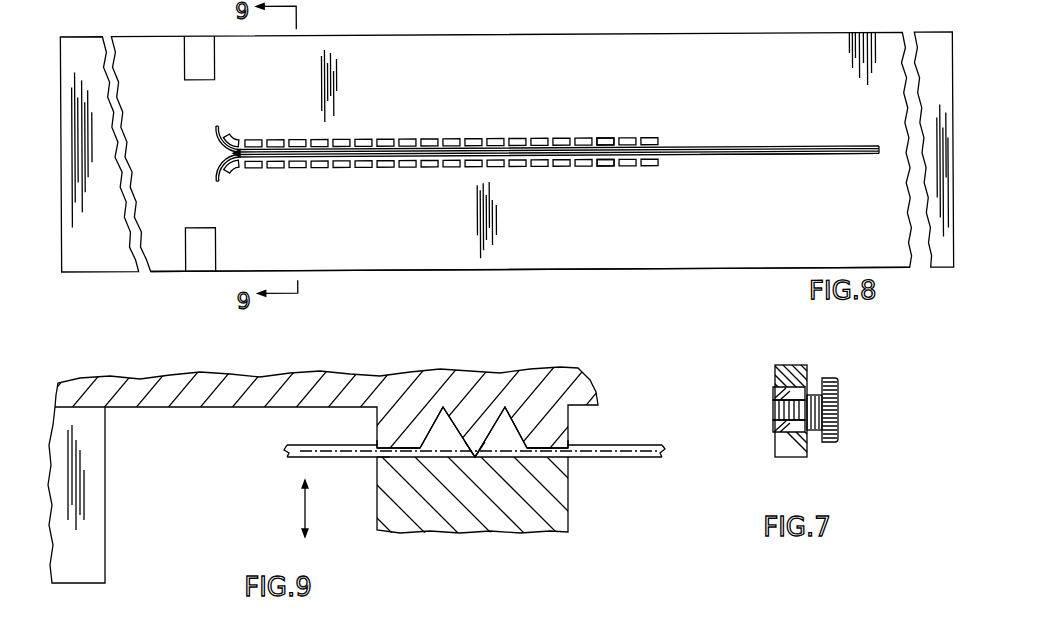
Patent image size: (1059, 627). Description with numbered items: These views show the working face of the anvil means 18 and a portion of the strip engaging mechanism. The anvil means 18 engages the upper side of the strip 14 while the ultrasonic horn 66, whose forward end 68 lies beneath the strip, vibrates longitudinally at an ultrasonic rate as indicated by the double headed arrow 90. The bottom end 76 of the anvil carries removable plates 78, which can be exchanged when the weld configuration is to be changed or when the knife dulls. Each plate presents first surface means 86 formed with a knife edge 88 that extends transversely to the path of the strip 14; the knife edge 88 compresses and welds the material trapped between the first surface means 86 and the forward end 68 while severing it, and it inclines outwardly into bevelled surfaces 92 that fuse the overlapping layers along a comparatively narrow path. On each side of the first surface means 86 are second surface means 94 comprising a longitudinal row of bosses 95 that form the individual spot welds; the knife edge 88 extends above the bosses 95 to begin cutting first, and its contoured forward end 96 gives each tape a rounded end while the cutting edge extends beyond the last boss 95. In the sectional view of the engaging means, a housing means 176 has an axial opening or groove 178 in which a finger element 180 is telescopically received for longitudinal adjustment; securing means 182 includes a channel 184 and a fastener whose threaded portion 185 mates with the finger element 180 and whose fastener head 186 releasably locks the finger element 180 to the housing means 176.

In FIG. 9, the strip 14 is at (622, 458).
In FIG. 9, the anvil means 18 is at (577, 365).
In FIG. 9, the ultrasonic horn 66 is at (569, 510).
In FIG. 9, the forward end of the horn 68 is at (369, 462).
In FIG. 8, the bottom end of the anvil 76 is at (682, 255).
In FIG. 8, the removable plates 78 is at (541, 270).
In FIG. 8, the first surface means 86 is at (749, 148).
In FIG. 9, the first surface means 86 is at (475, 456).
In FIG. 8, the knife edge 88 is at (851, 157).
In FIG. 9, the knife edge 88 is at (475, 459).
In FIG. 9, the double headed arrow 90 is at (302, 508).
In FIG. 9, the bevelled surfaces 92 is at (555, 432).
In FIG. 8, the second surface means 94 is at (606, 170).
In FIG. 9, the second surface means 94 is at (578, 410).
In FIG. 8, the bosses 95 is at (656, 167).
In FIG. 9, the bosses 95 is at (552, 460).
In FIG. 8, the forward end of the cutting edge 96 is at (213, 163).
In FIG. 7, the housing means 176 is at (793, 365).
In FIG. 7, the opening or groove 178 is at (775, 390).
In FIG. 7, the finger element 180 is at (775, 425).
In FIG. 7, the securing means 182 is at (838, 390).
In FIG. 7, the channel 184 is at (815, 442).
In FIG. 7, the threaded portion 185 is at (775, 410).
In FIG. 7, the fastener head 186 is at (835, 418).